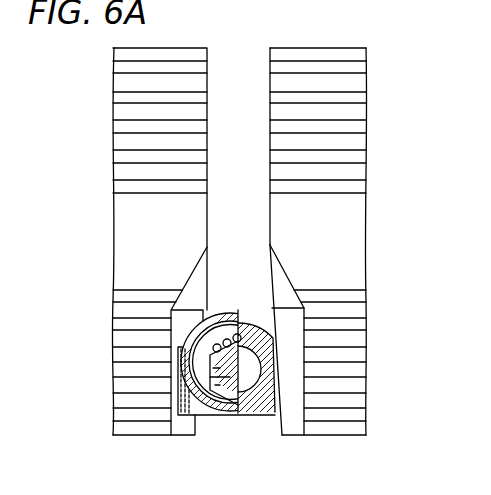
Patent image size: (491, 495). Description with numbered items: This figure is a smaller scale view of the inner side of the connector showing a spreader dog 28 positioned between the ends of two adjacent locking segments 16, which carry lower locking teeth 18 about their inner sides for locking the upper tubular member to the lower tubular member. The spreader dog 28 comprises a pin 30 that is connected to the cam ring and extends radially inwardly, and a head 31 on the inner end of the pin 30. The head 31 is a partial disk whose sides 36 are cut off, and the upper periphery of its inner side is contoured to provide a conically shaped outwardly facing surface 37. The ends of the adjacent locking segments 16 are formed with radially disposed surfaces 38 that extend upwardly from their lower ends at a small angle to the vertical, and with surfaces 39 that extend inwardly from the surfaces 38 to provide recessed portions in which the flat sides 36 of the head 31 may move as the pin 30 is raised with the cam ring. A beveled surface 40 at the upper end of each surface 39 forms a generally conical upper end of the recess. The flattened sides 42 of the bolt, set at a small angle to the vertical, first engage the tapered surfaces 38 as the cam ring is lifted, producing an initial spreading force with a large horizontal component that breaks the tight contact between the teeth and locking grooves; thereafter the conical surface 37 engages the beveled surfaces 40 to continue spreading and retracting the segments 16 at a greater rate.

The locking segments 16 is at (366, 62).
The lower locking teeth 18 is at (366, 401).
The spreader dog 28 is at (224, 392).
The pin 30 is at (255, 323).
The head 31 is at (206, 308).
The sides 36 is at (275, 383).
The conically shaped outwardly facing surface 37 is at (185, 349).
The radially disposed surfaces 38 is at (268, 270).
The surfaces 39 is at (292, 352).
The beveled surface 40 is at (282, 280).
The sides of the bolt 42 is at (277, 409).